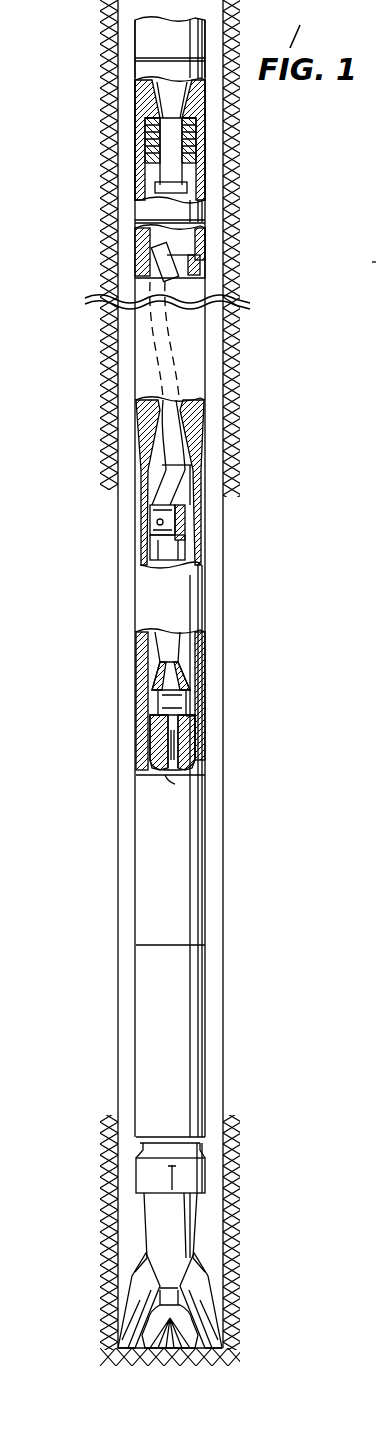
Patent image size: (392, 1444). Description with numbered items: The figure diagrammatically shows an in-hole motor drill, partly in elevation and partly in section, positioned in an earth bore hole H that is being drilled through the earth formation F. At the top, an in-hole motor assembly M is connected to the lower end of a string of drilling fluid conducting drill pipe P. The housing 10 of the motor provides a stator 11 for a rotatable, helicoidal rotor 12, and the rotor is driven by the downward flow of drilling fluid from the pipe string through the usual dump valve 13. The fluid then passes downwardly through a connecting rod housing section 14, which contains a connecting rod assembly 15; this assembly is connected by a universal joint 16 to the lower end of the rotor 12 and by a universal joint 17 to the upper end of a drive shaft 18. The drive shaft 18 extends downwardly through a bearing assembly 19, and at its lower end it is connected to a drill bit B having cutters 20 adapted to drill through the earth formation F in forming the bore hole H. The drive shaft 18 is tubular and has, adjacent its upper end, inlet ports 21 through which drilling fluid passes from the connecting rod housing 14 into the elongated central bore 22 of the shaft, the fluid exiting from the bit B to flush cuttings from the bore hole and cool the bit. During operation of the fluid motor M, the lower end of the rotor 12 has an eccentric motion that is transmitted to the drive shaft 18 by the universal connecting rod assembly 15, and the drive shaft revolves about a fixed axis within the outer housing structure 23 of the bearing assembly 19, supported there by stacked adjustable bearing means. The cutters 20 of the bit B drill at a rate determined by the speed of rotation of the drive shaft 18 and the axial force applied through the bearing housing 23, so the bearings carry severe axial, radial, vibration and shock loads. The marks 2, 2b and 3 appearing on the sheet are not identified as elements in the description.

The drill pipe P is at (148, 52).
The dump valve 13 is at (183, 171).
The housing 10 is at (208, 343).
The stator 11 is at (148, 420).
The in-hole motor assembly M is at (204, 437).
The helicoidal rotor 12 is at (172, 486).
The universal joint 16 is at (152, 518).
The connecting rod assembly 15 is at (152, 553).
The connecting rod housing section 14 is at (208, 553).
The universal joint 17 is at (162, 700).
The flow direction / pin 2 is at (185, 716).
The drive shaft 18 is at (166, 741).
The inlet ports 21 is at (185, 743).
The elongated central bore 22 is at (176, 782).
The bearing assembly 19 is at (209, 906).
The outer housing structure 23 is at (150, 1002).
The bore hole H is at (215, 1148).
The pin 2b is at (176, 1183).
The earth formation F is at (104, 1243).
The drill bit B is at (122, 1283).
The cutters 20 is at (212, 1331).
The partial numeral 3 is at (381, 273).